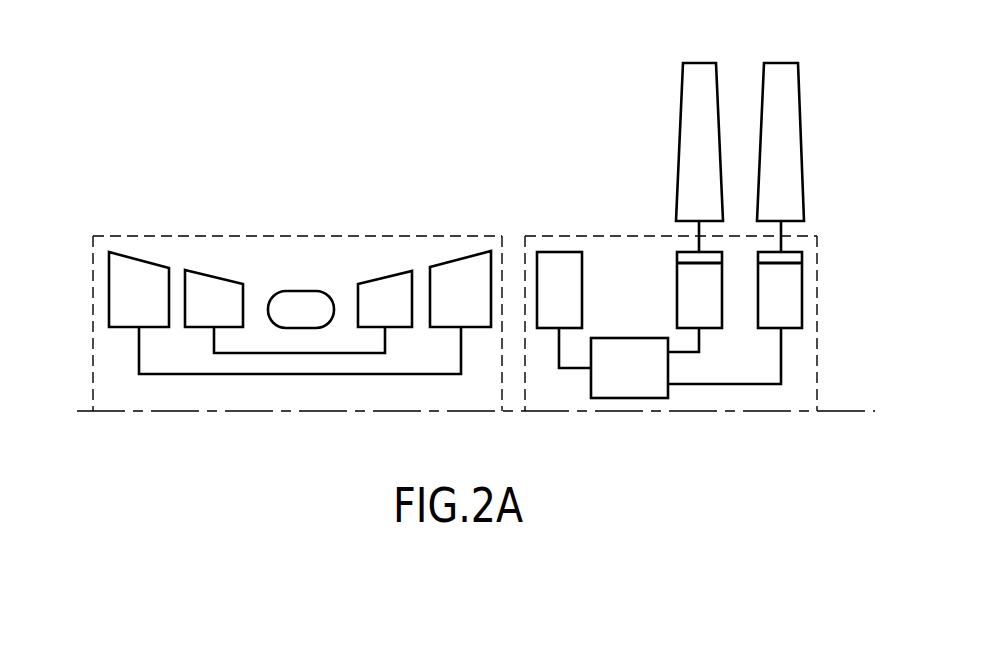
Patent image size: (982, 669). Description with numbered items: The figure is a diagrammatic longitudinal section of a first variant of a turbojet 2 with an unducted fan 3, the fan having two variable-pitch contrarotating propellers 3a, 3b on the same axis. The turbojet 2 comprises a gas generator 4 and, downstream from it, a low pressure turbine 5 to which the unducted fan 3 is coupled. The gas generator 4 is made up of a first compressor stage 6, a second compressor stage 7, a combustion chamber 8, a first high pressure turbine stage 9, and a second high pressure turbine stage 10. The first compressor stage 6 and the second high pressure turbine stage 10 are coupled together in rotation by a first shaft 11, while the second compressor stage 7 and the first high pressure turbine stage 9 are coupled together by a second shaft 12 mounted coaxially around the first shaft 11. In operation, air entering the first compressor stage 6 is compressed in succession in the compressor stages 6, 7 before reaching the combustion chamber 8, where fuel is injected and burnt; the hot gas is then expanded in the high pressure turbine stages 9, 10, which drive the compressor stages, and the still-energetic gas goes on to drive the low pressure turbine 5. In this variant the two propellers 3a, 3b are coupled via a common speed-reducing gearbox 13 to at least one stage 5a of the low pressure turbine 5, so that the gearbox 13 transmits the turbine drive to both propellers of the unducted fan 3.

The turbojet 2 is at (378, 205).
The unducted fan 3 is at (837, 82).
The propeller 3a is at (699, 63).
The propeller 3b is at (781, 63).
The gas generator 4 is at (93, 236).
The low pressure turbine 5 is at (817, 237).
The stage of the low pressure turbine 5a is at (571, 304).
The first compressor stage 6 is at (132, 308).
The second compressor stage 7 is at (207, 313).
The combustion chamber 8 is at (294, 321).
The first high pressure turbine stage 9 is at (378, 313).
The second high pressure turbine stage 10 is at (448, 307).
The first shaft 11 is at (243, 374).
The second shaft 12 is at (332, 353).
The speed-reducing gearbox 13 is at (617, 380).